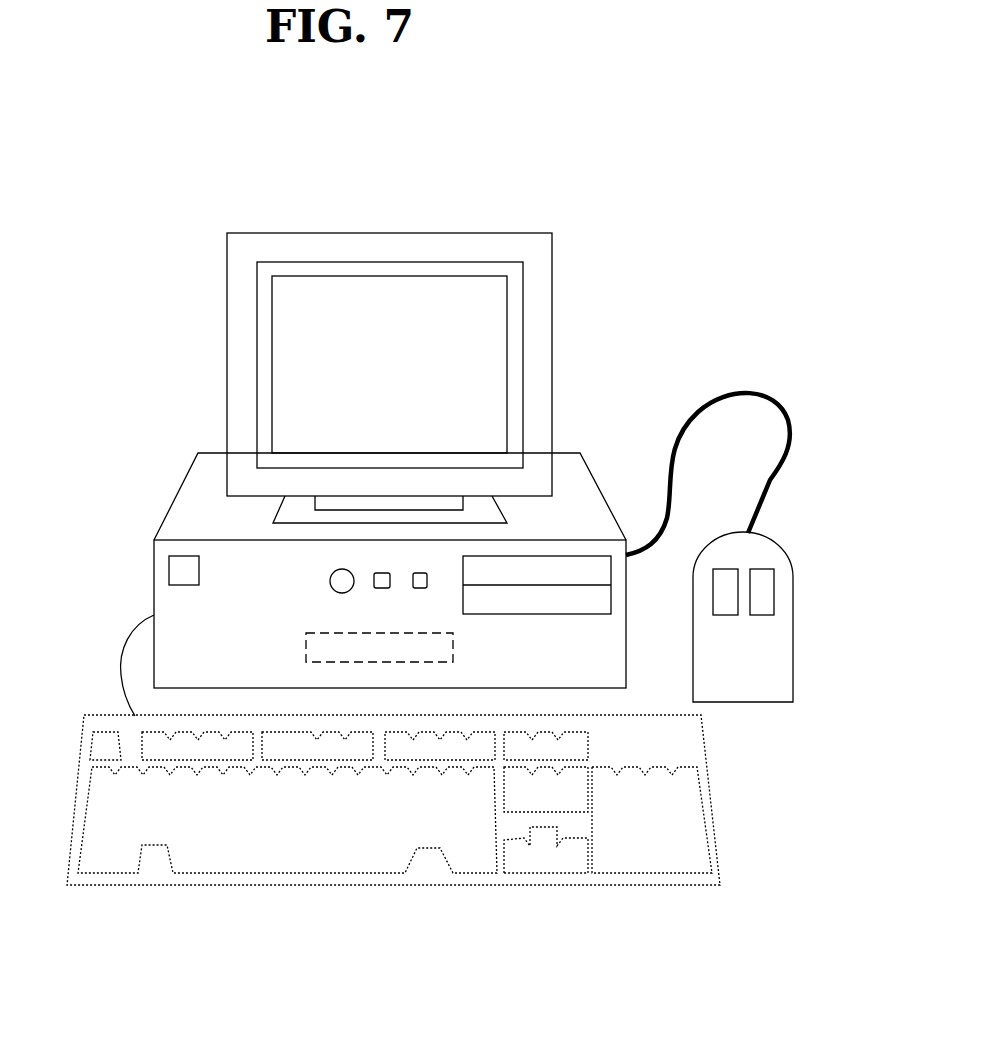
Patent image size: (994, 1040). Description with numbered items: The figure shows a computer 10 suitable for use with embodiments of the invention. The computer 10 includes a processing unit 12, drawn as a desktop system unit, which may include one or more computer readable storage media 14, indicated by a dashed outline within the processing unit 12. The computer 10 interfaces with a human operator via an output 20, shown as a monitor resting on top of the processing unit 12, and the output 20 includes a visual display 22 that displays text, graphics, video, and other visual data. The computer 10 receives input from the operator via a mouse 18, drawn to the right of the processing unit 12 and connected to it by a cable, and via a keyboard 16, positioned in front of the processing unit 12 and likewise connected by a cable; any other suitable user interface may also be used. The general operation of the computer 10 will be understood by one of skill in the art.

The computer 10 is at (622, 114).
The processing unit 12 is at (626, 612).
The computer readable storage media 14 is at (453, 648).
The keyboard 16 is at (710, 863).
The mouse 18 is at (793, 612).
The output 20 is at (552, 362).
The visual display 22 is at (388, 363).